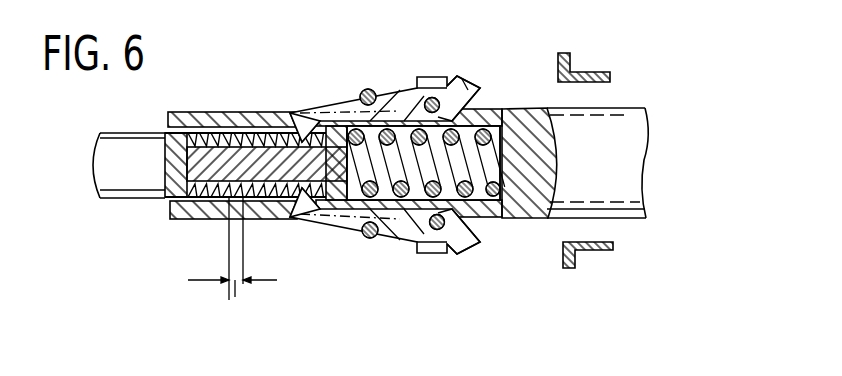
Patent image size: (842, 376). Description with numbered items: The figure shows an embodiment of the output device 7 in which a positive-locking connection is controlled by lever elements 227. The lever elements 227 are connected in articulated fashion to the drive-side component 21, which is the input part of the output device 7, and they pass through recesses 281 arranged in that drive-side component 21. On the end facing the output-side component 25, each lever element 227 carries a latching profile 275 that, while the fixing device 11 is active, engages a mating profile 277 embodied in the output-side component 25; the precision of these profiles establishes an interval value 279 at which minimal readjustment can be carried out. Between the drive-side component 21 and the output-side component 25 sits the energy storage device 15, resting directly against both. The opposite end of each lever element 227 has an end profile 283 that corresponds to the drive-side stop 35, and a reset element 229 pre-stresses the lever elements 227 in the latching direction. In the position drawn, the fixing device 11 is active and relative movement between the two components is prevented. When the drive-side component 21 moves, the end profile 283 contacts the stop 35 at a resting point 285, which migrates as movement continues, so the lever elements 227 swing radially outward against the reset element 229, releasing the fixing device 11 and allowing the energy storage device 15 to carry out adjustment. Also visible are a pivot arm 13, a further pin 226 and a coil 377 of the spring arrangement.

The output device 7 is at (394, 78).
The latching profile 275 is at (300, 112).
The lever element 227 is at (347, 93).
The actuating arm 13 is at (461, 74).
The end profile 283 is at (478, 80).
The drive-side stop 35 is at (582, 70).
The drive-side component 21 is at (623, 120).
The output-side component 25 is at (124, 180).
The mating profile 277 is at (222, 201).
The fixing device 11 is at (268, 222).
The interval value 279 is at (232, 264).
The recess 281 is at (296, 222).
The reset element 229 is at (366, 238).
The link pin 226 is at (436, 231).
The energy storage device 15 is at (426, 236).
The spring coil 377 is at (453, 190).
The resting point 285 is at (556, 247).